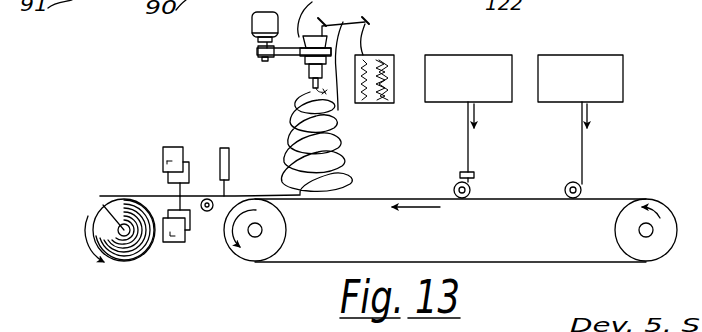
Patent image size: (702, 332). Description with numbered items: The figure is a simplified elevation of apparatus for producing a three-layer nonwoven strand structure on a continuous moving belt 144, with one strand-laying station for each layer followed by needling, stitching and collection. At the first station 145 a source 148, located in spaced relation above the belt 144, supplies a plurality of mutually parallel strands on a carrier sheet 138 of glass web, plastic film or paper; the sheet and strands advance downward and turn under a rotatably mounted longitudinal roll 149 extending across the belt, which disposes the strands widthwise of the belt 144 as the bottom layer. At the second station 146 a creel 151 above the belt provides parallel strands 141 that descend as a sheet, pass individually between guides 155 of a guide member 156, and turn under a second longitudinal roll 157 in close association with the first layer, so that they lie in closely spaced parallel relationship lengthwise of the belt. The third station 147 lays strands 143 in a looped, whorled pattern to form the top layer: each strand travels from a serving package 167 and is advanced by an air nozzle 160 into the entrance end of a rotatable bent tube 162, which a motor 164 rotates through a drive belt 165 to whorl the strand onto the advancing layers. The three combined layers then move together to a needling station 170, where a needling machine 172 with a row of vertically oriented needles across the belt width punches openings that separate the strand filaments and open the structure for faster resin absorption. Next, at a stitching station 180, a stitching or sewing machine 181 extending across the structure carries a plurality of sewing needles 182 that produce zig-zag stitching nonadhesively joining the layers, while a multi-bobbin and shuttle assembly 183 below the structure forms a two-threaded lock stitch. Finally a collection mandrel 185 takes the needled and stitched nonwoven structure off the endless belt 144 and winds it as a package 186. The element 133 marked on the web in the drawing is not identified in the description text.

The web 133 is at (226, 191).
The carrier sheet 138 is at (582, 122).
The strands 141 is at (468, 121).
The strands 143 is at (357, 157).
The continuous moving belt 144 is at (626, 199).
The first station 145 is at (590, 150).
The second station 146 is at (520, 131).
The third station 147 is at (274, 115).
The source 148 is at (614, 55).
The longitudinal roll 149 is at (566, 186).
The creel 151 is at (502, 55).
The guides 155 is at (466, 170).
The guide member 156 is at (474, 176).
The longitudinal roll 157 is at (456, 186).
The air nozzle 160 is at (333, 55).
The rotatable bent tube 162 is at (312, 92).
The motor 164 is at (252, 24).
The drive belt 165 is at (276, 56).
The serving package 167 is at (383, 55).
The needling station 170 is at (208, 141).
The needling machine 172 is at (228, 142).
The stitching station 180 is at (168, 137).
The stitching or sewing machine 181 is at (163, 155).
The sewing needles 182 is at (168, 180).
The multi-bobbin and shuttle assembly 183 is at (181, 242).
The collection mandrel 185 is at (117, 222).
The package 186 is at (95, 204).